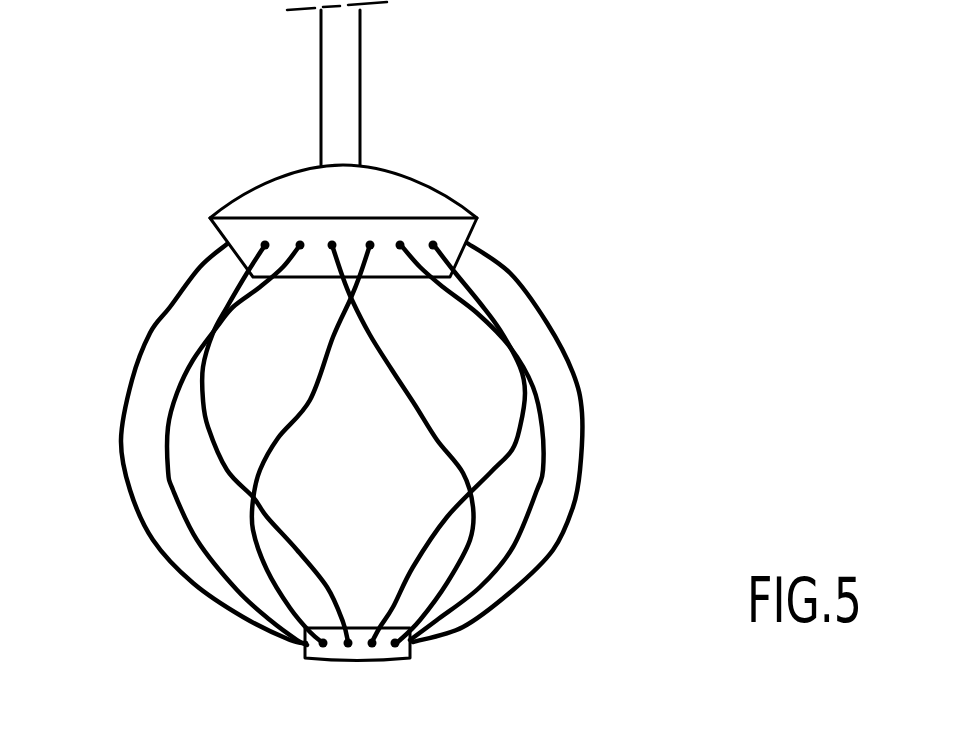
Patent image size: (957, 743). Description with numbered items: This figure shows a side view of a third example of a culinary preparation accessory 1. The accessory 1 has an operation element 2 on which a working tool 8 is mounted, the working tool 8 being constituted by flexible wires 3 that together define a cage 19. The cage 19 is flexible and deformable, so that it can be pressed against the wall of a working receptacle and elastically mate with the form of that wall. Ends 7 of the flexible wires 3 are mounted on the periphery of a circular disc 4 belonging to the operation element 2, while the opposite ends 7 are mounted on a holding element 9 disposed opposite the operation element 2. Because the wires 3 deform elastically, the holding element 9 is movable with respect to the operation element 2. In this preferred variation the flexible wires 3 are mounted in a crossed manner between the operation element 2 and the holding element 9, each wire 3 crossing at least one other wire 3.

The accessory 1 is at (181, 167).
The operation element 2 is at (345, 52).
The flexible wire 3 is at (565, 522).
The circular disc 4 is at (418, 203).
The ends 7 is at (224, 246).
The working tool 8 is at (594, 398).
The holding element 9 is at (357, 658).
The cage 19 is at (372, 505).